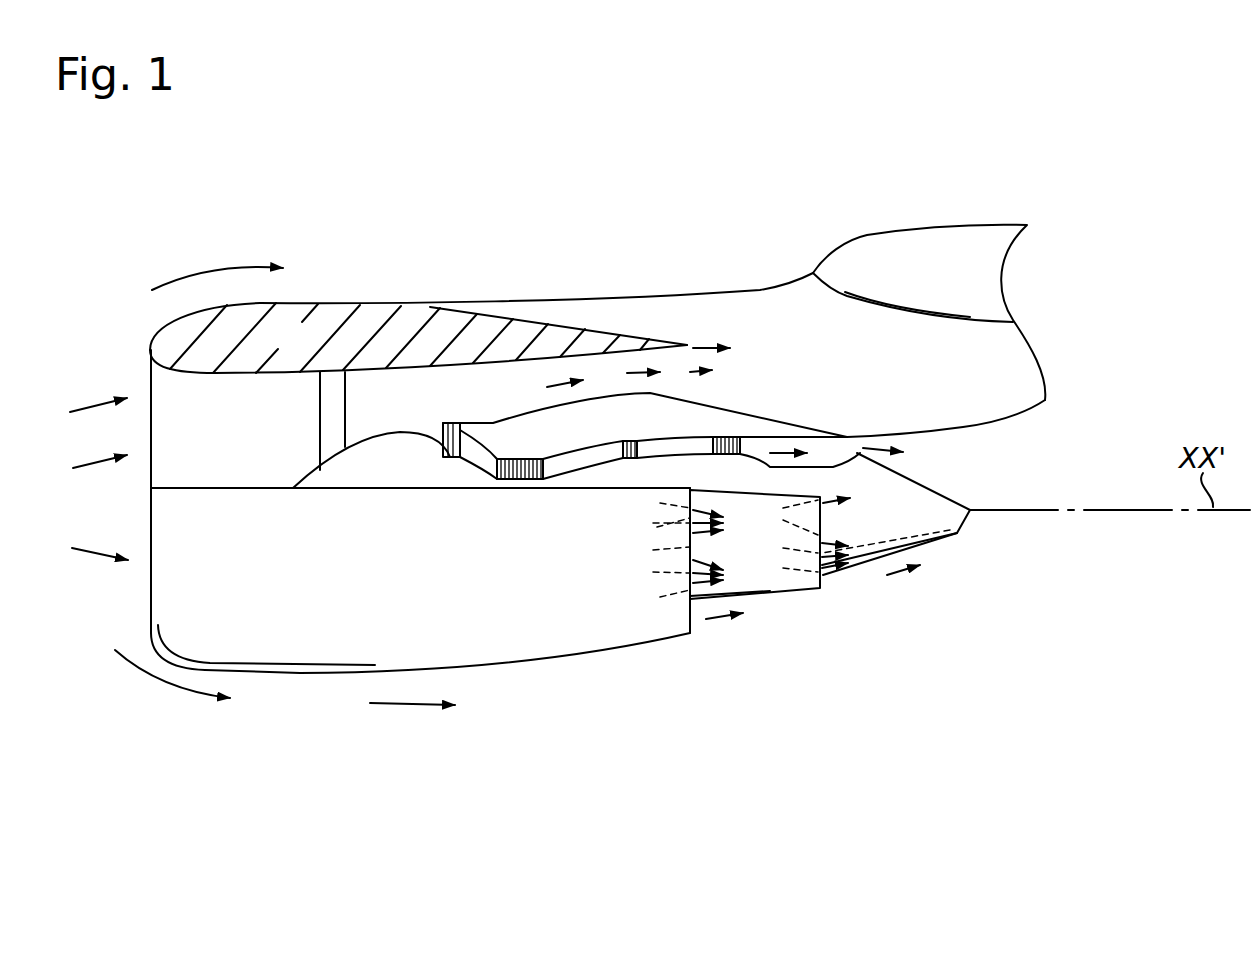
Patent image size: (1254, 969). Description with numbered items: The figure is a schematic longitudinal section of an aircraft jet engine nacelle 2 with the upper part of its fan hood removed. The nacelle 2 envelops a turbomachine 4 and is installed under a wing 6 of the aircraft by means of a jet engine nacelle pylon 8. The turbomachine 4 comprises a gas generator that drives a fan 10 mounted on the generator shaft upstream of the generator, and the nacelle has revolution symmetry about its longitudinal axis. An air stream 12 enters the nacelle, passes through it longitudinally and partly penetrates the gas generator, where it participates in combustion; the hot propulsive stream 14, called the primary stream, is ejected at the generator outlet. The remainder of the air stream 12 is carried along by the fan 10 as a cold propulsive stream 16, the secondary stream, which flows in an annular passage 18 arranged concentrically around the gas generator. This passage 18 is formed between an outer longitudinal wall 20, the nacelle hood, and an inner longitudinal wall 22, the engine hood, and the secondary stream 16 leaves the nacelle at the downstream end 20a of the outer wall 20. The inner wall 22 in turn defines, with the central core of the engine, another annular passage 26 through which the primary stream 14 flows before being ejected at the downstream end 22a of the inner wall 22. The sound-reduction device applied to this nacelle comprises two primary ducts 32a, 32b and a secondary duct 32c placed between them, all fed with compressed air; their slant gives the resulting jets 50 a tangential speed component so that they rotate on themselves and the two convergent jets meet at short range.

The aircraft jet engine nacelle 2 is at (308, 285).
The turbomachine 4 is at (546, 408).
The wing 6 is at (985, 228).
The jet engine nacelle pylon 8 is at (623, 317).
The fan 10 is at (320, 406).
The air stream 12 is at (93, 405).
The hot propulsive stream 14 is at (792, 453).
The cold propulsive stream 16 is at (690, 372).
The annular passage 18 is at (516, 381).
The outer longitudinal wall 20 is at (315, 353).
The downstream end of outer wall 20a is at (697, 335).
The inner longitudinal wall 22 is at (577, 450).
The downstream end of inner wall 22a is at (820, 590).
The annular passage 26 is at (750, 443).
The primary duct 32a is at (660, 503).
The primary duct 32b is at (660, 597).
The secondary duct 32c is at (657, 527).
The jets 50 is at (713, 347).